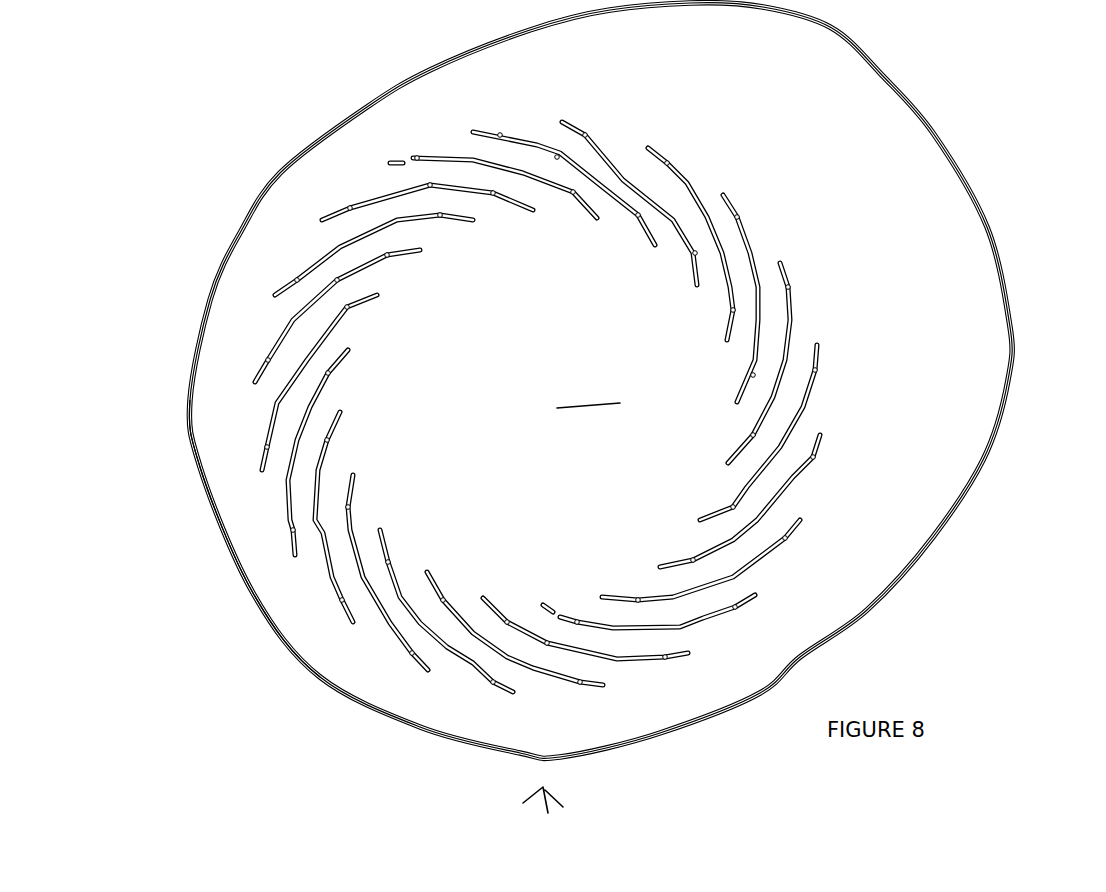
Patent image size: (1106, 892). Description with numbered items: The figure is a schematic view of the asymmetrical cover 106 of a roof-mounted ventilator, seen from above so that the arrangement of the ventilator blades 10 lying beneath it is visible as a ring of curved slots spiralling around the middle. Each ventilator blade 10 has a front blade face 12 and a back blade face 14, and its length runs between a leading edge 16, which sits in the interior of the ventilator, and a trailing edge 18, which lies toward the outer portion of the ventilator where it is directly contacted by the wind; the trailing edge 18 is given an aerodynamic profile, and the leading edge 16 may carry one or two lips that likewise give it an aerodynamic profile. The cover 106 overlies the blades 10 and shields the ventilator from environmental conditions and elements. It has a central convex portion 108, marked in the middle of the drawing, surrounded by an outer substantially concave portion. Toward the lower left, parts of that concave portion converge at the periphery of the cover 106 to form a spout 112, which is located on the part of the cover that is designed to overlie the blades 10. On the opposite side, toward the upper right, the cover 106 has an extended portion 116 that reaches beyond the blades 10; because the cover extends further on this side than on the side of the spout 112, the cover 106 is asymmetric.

The ventilator blade 10 is at (703, 618).
The front blade face 12 is at (628, 203).
The back blade face 14 is at (568, 150).
The leading edge 16 is at (697, 283).
The trailing edge 18 is at (570, 130).
The asymmetrical cover 106 is at (640, 381).
The central convex portion 108 is at (588, 387).
The spout 112 is at (229, 625).
The extended portion 116 is at (990, 157).